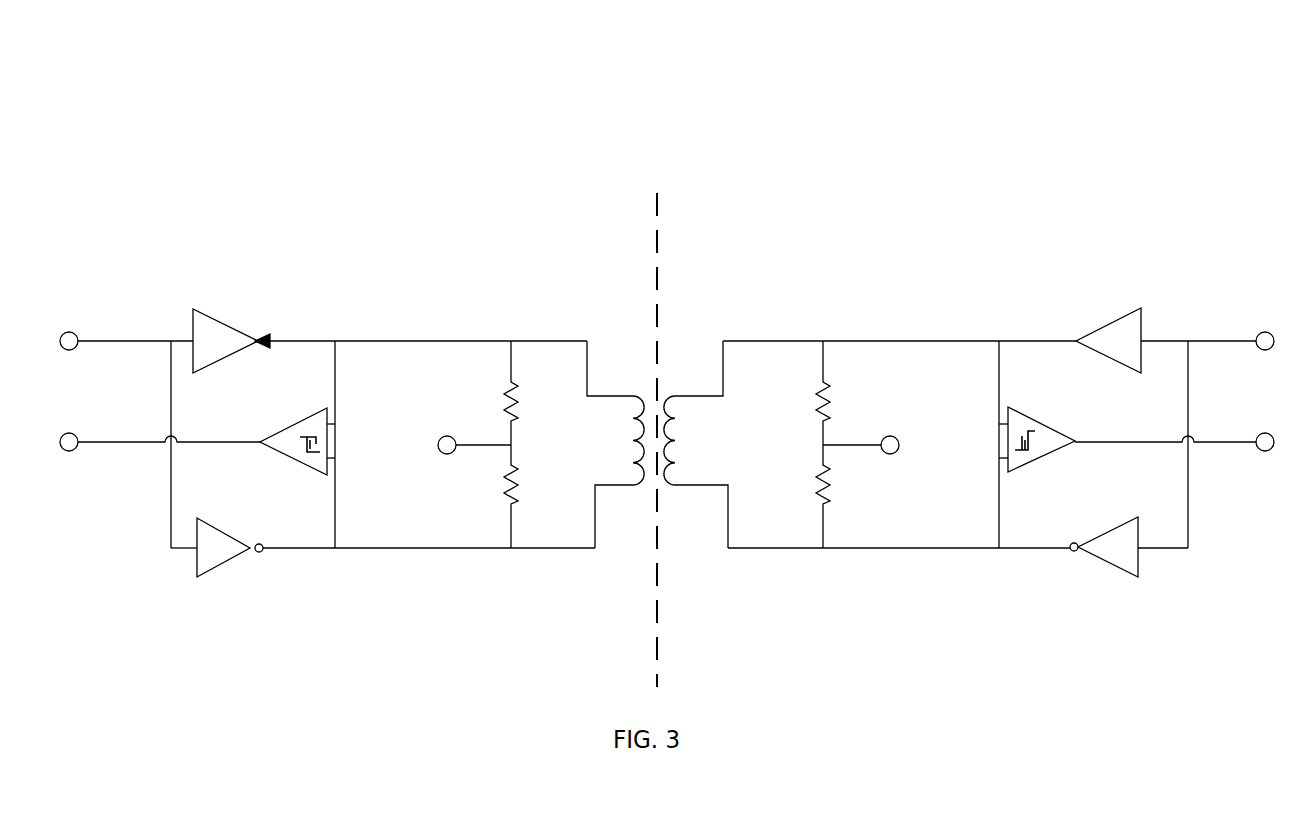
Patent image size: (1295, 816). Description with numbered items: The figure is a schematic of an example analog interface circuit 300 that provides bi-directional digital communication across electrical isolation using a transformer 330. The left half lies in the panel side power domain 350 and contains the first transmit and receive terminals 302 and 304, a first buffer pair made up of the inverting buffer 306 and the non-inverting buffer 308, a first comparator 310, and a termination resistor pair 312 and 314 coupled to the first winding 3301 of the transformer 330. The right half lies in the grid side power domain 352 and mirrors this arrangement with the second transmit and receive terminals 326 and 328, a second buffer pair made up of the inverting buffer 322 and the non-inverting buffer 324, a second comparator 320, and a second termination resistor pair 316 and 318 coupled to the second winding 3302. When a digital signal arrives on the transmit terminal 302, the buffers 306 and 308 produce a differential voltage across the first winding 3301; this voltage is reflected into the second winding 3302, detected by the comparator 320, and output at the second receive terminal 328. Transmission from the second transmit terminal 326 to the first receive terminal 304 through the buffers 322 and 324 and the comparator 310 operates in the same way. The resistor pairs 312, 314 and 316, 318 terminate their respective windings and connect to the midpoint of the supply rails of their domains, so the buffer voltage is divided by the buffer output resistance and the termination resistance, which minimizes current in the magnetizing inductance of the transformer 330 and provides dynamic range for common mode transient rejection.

The analog interface circuit 300 is at (294, 83).
The first transmit terminal 302 is at (68, 310).
The first receive terminal 304 is at (72, 474).
The inverting buffer 306 is at (231, 357).
The non-inverting buffer 308 is at (230, 563).
The first comparator 310 is at (293, 454).
The termination resistor 312 is at (532, 393).
The termination resistor 314 is at (532, 496).
The termination resistor 316 is at (802, 393).
The termination resistor 318 is at (802, 496).
The second comparator 320 is at (1041, 454).
The inverting buffer 322 is at (1108, 356).
The non-inverting buffer 324 is at (1104, 562).
The second transmit terminal 326 is at (1260, 311).
The second receive terminal 328 is at (1255, 474).
The transformer 330 is at (660, 444).
The first winding 3301 is at (611, 444).
The second winding 3302 is at (703, 444).
The panel side power domain 350 is at (571, 227).
The grid side power domain 352 is at (779, 227).